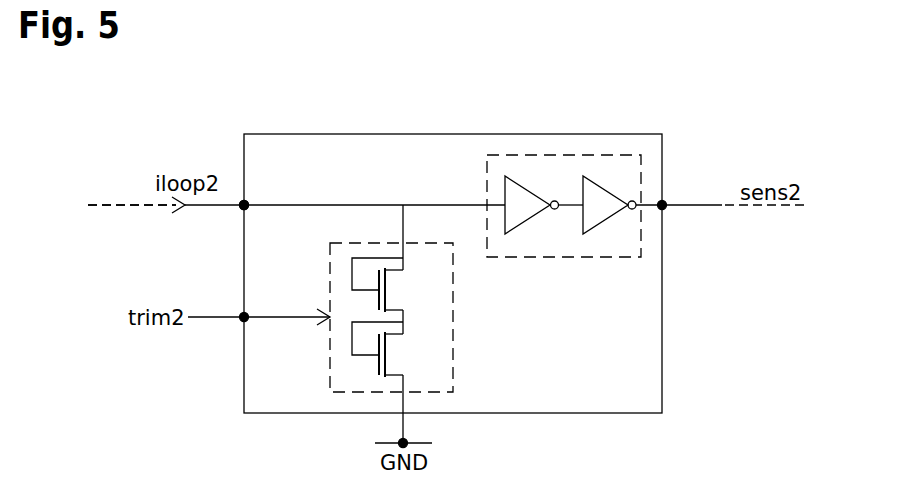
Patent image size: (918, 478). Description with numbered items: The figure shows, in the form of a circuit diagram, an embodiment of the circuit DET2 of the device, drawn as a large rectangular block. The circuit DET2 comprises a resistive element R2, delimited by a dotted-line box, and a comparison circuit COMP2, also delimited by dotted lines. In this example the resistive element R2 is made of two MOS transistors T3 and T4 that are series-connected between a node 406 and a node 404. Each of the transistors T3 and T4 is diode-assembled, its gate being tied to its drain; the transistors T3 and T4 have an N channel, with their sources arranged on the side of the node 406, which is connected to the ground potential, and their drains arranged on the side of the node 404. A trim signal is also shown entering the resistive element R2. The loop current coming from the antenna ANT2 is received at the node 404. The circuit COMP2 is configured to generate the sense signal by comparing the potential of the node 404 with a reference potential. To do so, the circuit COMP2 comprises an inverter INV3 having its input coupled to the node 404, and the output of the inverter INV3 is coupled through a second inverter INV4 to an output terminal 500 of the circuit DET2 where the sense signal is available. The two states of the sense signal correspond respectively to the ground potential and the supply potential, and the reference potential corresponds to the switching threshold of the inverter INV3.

The node 404 is at (240, 208).
The node 406 is at (405, 441).
The output terminal 500 is at (665, 208).
The antenna ANT2 is at (121, 197).
The circuit DET2 is at (590, 102).
The circuit COMP2 is at (553, 277).
The inverter INV3 is at (518, 197).
The inverter INV4 is at (595, 202).
The resistive element R2 is at (453, 360).
The MOS transistor T3 is at (396, 292).
The MOS transistor T4 is at (396, 358).